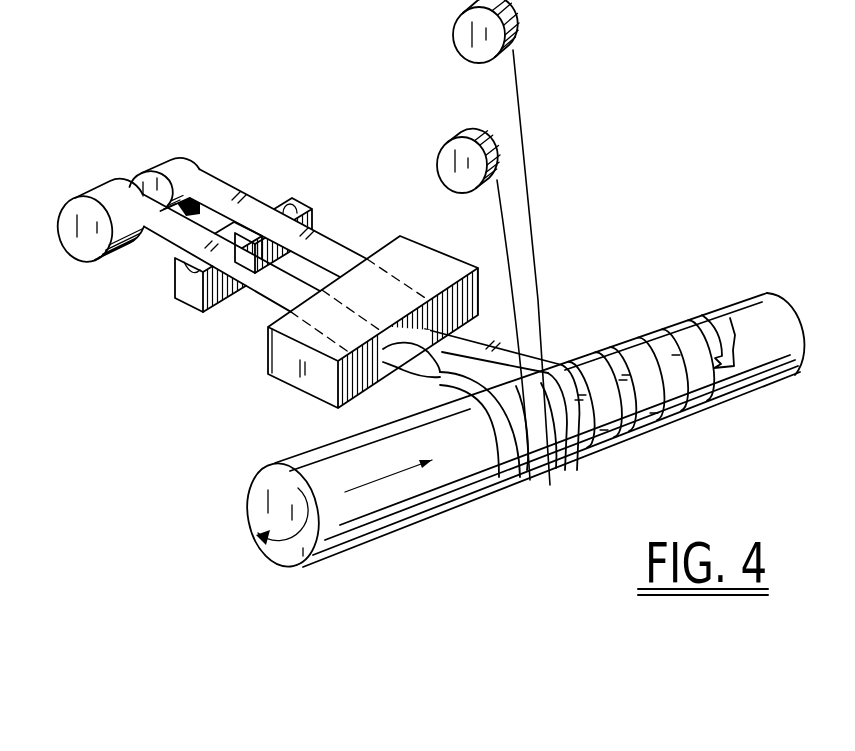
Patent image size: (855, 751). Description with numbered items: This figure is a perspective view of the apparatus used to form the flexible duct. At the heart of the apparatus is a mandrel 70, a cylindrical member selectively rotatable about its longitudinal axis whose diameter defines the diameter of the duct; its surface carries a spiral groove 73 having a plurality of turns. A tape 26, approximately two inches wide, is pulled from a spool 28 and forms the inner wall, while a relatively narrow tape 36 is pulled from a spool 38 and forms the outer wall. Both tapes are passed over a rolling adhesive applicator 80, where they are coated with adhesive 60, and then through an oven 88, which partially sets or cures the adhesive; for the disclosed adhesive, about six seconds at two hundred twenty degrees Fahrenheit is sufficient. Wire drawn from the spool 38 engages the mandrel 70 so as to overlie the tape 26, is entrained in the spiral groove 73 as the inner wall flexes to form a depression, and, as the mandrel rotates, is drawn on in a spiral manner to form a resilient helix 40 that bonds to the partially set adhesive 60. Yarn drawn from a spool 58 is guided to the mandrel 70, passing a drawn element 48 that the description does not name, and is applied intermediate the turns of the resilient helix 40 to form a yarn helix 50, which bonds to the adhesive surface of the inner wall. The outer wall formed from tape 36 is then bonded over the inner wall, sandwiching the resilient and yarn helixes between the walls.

The tape 26 is at (173, 230).
The spool 28 is at (93, 245).
The tape 36 is at (230, 198).
The spool 38 is at (137, 176).
The resilient helix 40 is at (537, 466).
The first pulley 48 is at (467, 167).
The yarn helix 50 is at (558, 435).
The spool 58 is at (473, 43).
The adhesive 60 is at (189, 287).
The mandrel 70 is at (263, 513).
The spiral groove 73 is at (515, 477).
The rolling adhesive applicator 80 is at (297, 207).
The oven 88 is at (293, 360).